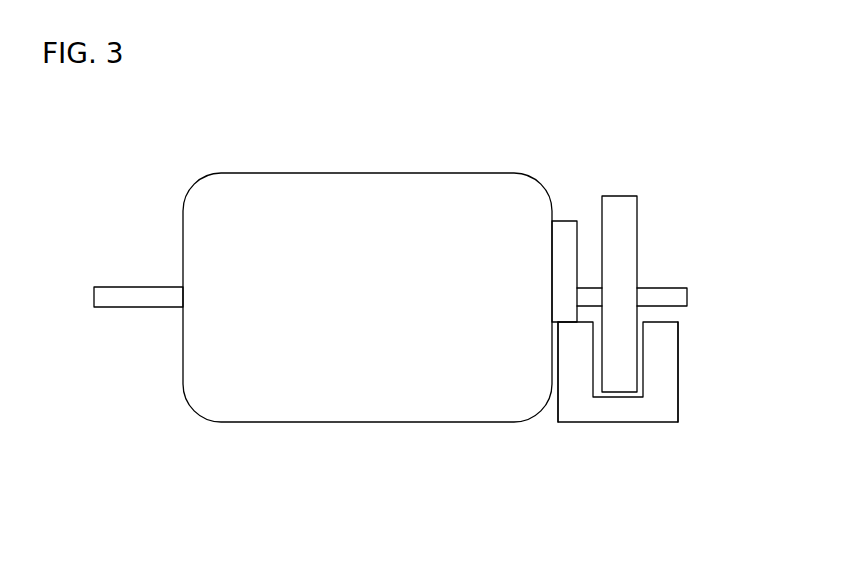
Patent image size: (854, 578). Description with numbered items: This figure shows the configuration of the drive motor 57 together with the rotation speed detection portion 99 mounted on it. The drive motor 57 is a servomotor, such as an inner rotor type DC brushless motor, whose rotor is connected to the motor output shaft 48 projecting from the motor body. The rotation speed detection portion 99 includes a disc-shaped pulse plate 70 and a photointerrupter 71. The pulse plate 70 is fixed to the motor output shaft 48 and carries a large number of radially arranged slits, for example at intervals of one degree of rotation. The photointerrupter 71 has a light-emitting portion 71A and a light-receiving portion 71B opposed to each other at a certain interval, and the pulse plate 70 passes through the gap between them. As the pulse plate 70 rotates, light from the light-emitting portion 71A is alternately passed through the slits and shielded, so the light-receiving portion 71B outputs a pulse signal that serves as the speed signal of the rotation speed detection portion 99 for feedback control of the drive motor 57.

The drive motor 57 is at (205, 177).
The rotation speed detection portion 99 is at (692, 168).
The motor output shaft 48 is at (679, 288).
The pulse plate 70 is at (621, 196).
The photointerrupter 71 is at (618, 452).
The light-emitting portion 71A is at (556, 394).
The light-receiving portion 71B is at (679, 353).